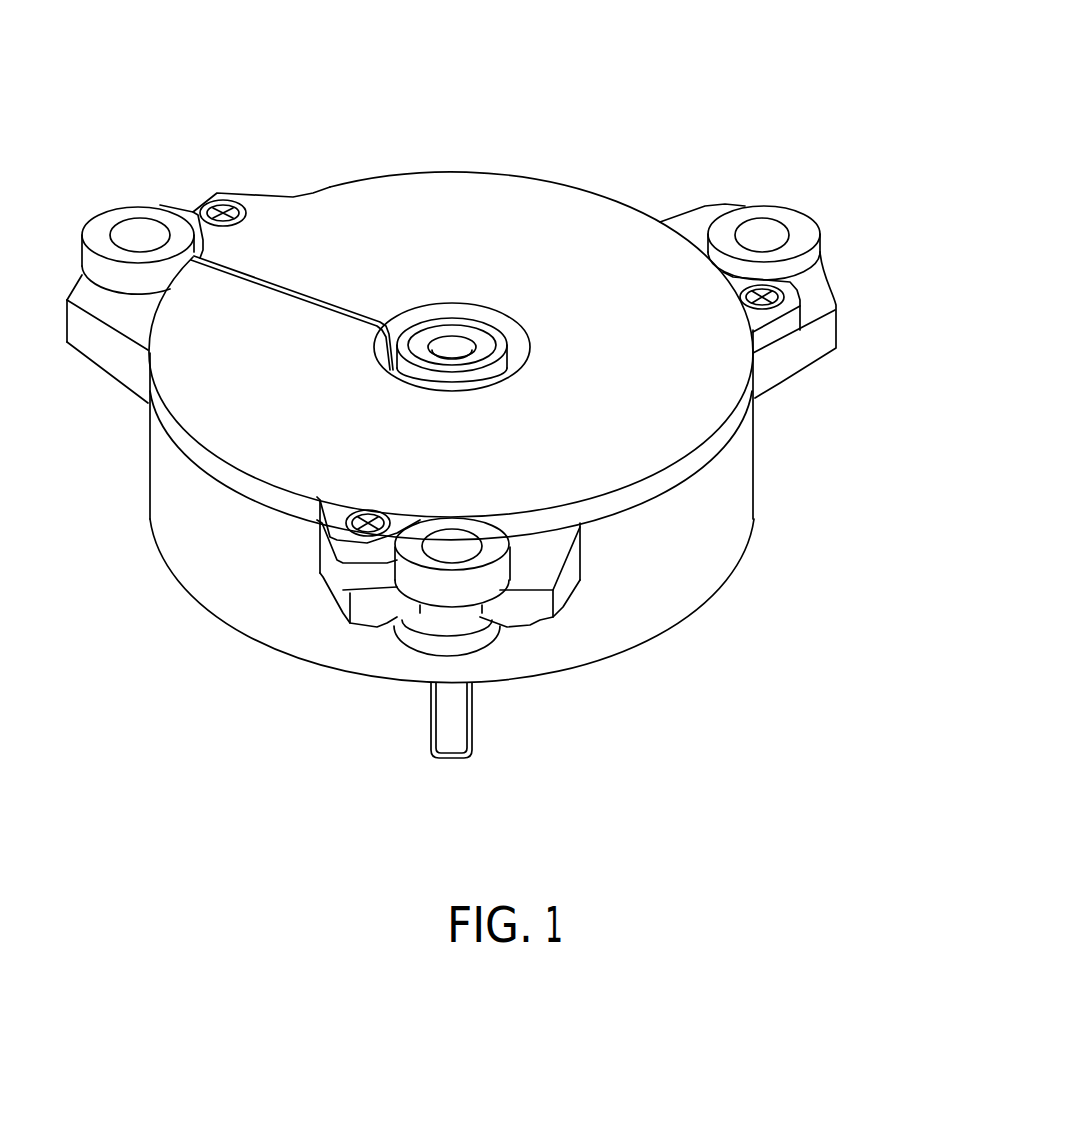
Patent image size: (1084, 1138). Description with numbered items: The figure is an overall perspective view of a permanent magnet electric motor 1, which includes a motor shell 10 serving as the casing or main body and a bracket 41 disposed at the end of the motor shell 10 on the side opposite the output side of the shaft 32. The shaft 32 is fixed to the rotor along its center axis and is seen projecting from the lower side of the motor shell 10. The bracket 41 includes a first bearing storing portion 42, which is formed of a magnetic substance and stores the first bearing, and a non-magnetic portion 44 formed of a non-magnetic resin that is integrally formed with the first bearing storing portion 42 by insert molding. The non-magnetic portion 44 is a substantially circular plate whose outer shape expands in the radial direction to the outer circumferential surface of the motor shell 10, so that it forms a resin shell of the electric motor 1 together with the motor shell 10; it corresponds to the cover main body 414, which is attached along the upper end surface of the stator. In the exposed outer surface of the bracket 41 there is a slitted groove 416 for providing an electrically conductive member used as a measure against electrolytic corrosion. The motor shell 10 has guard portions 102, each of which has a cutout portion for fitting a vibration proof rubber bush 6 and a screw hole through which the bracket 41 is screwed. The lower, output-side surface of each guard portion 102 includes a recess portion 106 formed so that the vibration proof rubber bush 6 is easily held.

The electric motor 1 is at (699, 113).
The vibration proof rubber bush 6 is at (103, 232).
The motor shell 10 is at (760, 456).
The shaft 32 is at (457, 722).
The bracket 41 is at (451, 280).
The first bearing storing portion 42 is at (403, 345).
The non-magnetic portion 44 is at (451, 280).
The guard portion 102 is at (132, 318).
The recess portion 106 is at (488, 624).
The cover main body 414 is at (548, 210).
The slitted groove 416 is at (297, 285).